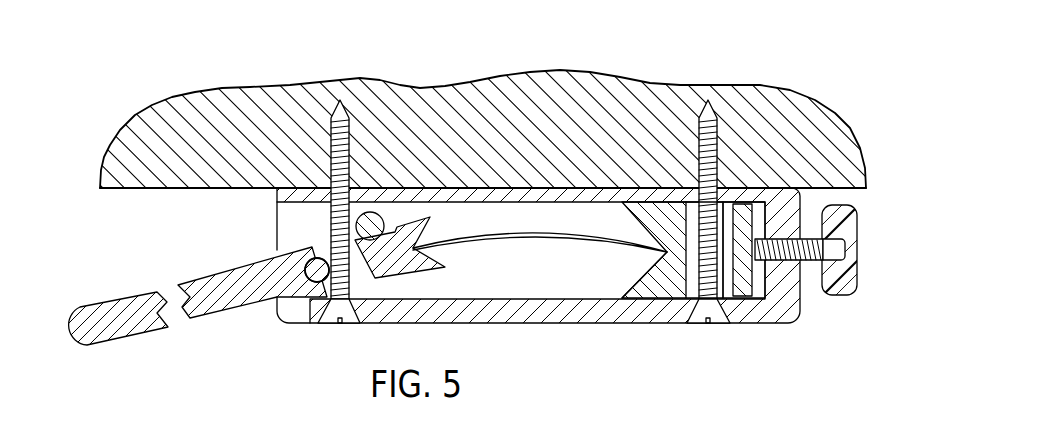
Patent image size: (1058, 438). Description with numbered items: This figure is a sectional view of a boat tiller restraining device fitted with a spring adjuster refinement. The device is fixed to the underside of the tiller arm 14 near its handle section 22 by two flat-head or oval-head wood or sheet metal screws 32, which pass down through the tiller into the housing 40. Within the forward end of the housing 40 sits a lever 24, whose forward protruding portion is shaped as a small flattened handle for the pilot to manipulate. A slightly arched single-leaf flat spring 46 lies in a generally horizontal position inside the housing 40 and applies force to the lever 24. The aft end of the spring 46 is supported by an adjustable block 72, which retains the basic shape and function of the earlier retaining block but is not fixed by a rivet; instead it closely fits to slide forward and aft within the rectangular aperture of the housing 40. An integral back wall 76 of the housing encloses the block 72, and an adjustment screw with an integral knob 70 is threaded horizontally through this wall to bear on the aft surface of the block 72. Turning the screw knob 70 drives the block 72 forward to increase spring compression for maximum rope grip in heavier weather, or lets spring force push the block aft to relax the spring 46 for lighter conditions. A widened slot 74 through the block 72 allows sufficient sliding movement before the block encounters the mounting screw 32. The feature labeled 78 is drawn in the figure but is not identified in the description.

The tiller arm 14 is at (640, 75).
The handle section 22 is at (184, 190).
The lever 24 is at (226, 312).
The screws 32 is at (697, 324).
The housing 40 is at (556, 325).
The spring 46 is at (531, 234).
The screw knob 70 is at (850, 300).
The adjustable block 72 is at (638, 222).
The widened slot 74 is at (740, 300).
The back wall 76 is at (802, 297).
The inclined surface 78 is at (659, 253).